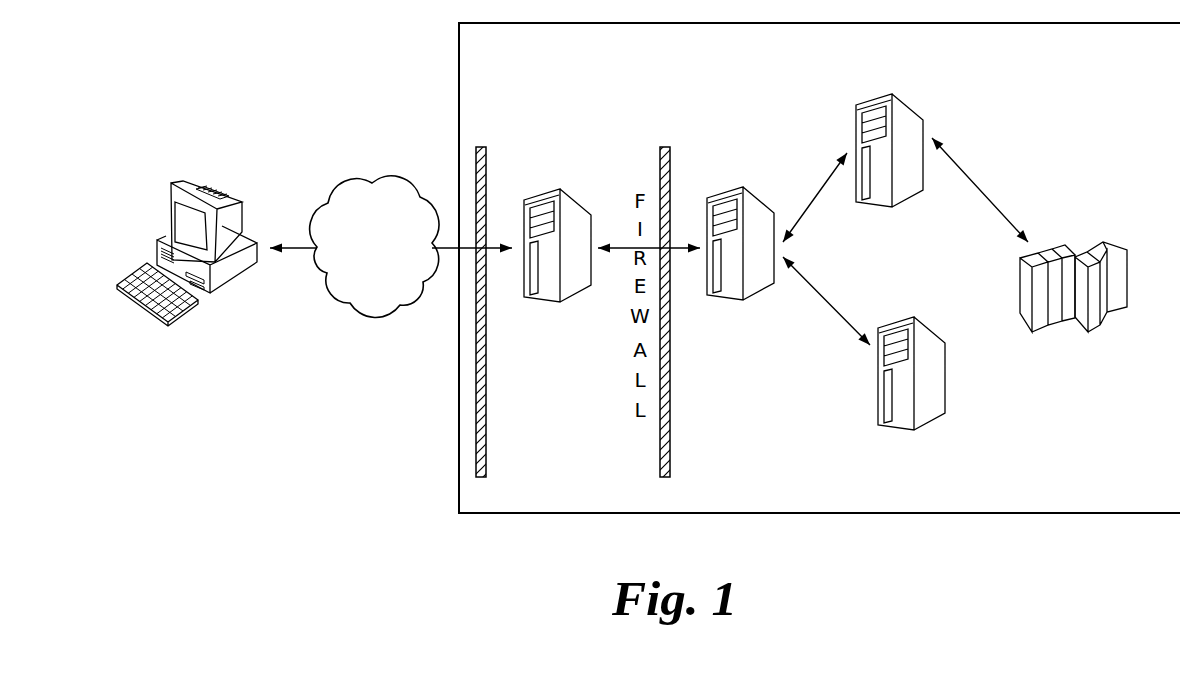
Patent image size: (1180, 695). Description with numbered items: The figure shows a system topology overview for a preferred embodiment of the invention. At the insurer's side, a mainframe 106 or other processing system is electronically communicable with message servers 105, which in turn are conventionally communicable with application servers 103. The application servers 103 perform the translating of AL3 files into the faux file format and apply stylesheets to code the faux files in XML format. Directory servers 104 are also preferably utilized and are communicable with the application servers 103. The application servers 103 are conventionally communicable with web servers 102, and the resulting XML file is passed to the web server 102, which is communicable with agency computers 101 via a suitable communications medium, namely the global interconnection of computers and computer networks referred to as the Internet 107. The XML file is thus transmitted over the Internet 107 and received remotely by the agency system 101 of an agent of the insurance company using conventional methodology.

The agency system 101 is at (210, 183).
The web server 102 is at (574, 201).
The application server 103 is at (760, 199).
The directory server 104 is at (878, 383).
The message server 105 is at (908, 106).
The mainframe 106 is at (1067, 249).
The Internet 107 is at (362, 182).